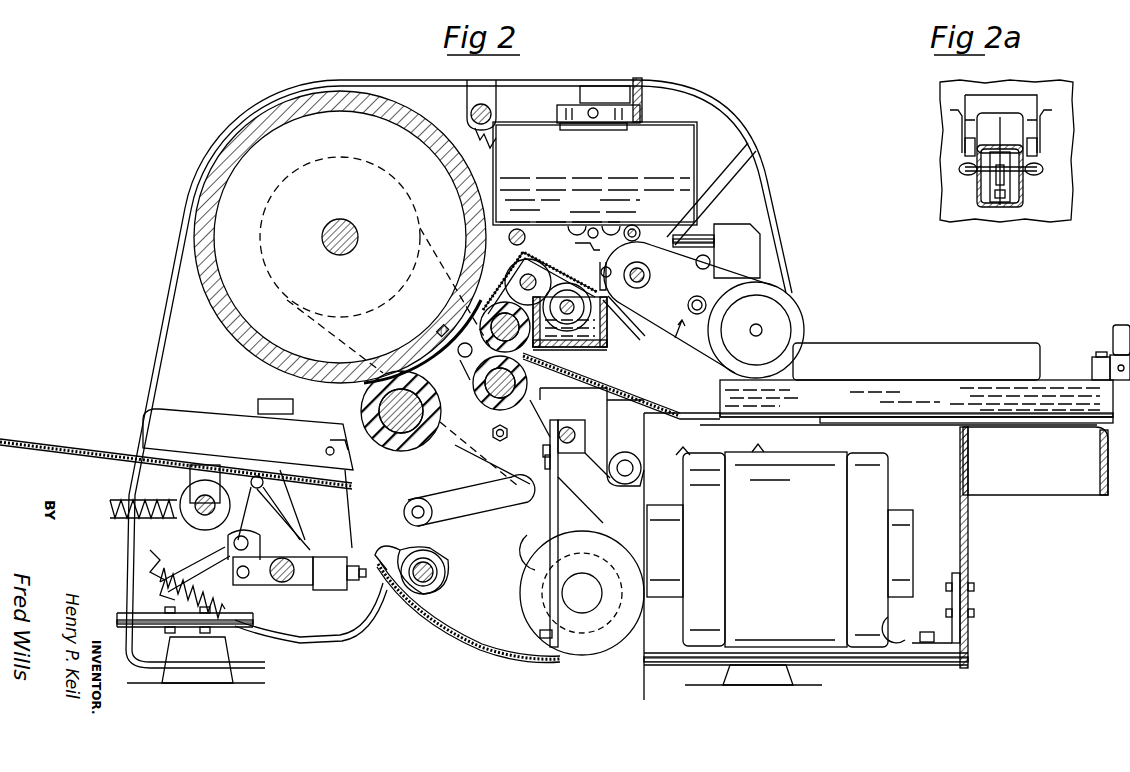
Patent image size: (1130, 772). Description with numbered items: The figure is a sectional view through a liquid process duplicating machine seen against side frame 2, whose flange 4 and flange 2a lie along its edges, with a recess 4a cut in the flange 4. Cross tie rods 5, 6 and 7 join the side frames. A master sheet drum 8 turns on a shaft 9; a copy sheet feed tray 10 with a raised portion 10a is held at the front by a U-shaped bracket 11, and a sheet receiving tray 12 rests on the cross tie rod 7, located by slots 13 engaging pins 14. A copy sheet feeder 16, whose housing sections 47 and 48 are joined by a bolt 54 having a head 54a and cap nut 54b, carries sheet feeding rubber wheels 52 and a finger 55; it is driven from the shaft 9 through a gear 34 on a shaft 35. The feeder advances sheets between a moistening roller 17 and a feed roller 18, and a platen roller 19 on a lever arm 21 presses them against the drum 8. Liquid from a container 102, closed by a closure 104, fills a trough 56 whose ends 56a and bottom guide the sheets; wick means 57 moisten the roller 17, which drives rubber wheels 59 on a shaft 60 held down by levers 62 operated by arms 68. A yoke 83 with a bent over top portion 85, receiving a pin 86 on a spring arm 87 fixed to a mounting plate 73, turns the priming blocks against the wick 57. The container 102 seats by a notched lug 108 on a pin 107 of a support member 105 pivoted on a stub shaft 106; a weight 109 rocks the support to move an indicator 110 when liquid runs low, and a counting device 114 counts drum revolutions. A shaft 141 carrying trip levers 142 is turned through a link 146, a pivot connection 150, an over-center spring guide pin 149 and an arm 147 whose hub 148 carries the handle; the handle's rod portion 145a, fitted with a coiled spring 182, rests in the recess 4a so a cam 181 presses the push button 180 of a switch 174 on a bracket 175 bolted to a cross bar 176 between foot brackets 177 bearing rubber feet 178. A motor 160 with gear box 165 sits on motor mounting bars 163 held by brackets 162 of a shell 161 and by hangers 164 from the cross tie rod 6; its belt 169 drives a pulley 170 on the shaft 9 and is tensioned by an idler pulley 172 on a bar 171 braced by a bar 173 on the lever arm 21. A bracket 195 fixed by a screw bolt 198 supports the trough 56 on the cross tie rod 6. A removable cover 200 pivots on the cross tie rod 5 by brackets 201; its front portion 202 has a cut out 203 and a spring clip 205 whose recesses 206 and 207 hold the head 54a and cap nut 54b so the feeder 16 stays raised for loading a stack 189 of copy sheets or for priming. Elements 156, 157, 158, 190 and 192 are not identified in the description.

In FIG. 2, the side frame 2 is at (222, 372).
In FIG. 2, the flange 4 is at (182, 230).
In FIG. 2, the recess 4a is at (112, 522).
In FIG. 2, the cross tie rod 5 is at (470, 118).
In FIG. 2, the cross tie rod 6 is at (576, 432).
In FIG. 2, the cross tie rod 7 is at (567, 305).
In FIG. 2, the master sheet drum 8 is at (210, 282).
In FIG. 2, the shaft 9 is at (322, 237).
In FIG. 2, the copy sheet feed tray 10 is at (818, 413).
In FIG. 2, the raised portion of feed tray 10a is at (600, 375).
In FIG. 2, the bracket 11 is at (1030, 480).
In FIG. 2, the sheet receiving tray 12 is at (212, 433).
In FIG. 2, the slots 13 is at (330, 440).
In FIG. 2, the pins 14 is at (325, 451).
In FIG. 2, the copy sheet feeder 16 is at (674, 336).
In FIG. 2, the moistening roller 17 is at (460, 348).
In FIG. 2, the feed roller 18 is at (478, 399).
In FIG. 2, the platen roller 19 is at (423, 432).
In FIG. 2, the lever arm 21 is at (410, 479).
In FIG. 2, the gear 34 is at (478, 150).
In FIG. 2, the shaft 35 is at (513, 245).
In FIG. 2, the housing section 47 is at (688, 286).
In FIG. 2A, the housing section 47 is at (978, 200).
In FIG. 2A, the housing section 48 is at (1024, 198).
In FIG. 2, the sheet feeding rubber wheels 52 is at (804, 323).
In FIG. 2, the bolt 54 is at (624, 318).
In FIG. 2A, the bolt 54 is at (980, 183).
In FIG. 2, the head of bolt 54a is at (688, 306).
In FIG. 2A, the head of bolt 54a is at (960, 170).
In FIG. 2A, the cap nut 54b is at (1044, 170).
In FIG. 2, the finger 55 is at (585, 245).
In FIG. 2A, the finger 55 is at (1024, 180).
In FIG. 2, the trough 56 is at (608, 344).
In FIG. 2, the ends of trough 56a is at (596, 360).
In FIG. 2, the wick means 57 is at (505, 290).
In FIG. 2, the rubber wheels 59 is at (536, 276).
In FIG. 2, the shaft 60 is at (526, 289).
In FIG. 2, the levers 62 is at (478, 333).
In FIG. 2, the arms 68 is at (462, 362).
In FIG. 2, the mounting plate 73 is at (510, 272).
In FIG. 2, the yoke 83 is at (620, 320).
In FIG. 2, the bent over top portion 85 is at (614, 269).
In FIG. 2, the pin 86 is at (600, 280).
In FIG. 2, the spring arm 87 is at (540, 279).
In FIG. 2, the container 102 is at (497, 142).
In FIG. 2, the closure 104 is at (557, 110).
In FIG. 2, the support member 105 is at (672, 243).
In FIG. 2, the stub shaft 106 is at (628, 226).
In FIG. 2, the pin 107 is at (590, 228).
In FIG. 2, the notched lug 108 is at (587, 236).
In FIG. 2, the weight 109 is at (746, 250).
In FIG. 2, the indicator 110 is at (716, 175).
In FIG. 2, the counting device 114 is at (615, 102).
In FIG. 2, the shaft 141 is at (278, 582).
In FIG. 2, the trip levers 142 is at (250, 585).
In FIG. 2, the rod portion of handle 145a is at (110, 504).
In FIG. 2, the link 146 is at (248, 540).
In FIG. 2, the arm 147 is at (264, 485).
In FIG. 2, the hub 148 is at (205, 530).
In FIG. 2, the over-center spring guide pin 149 is at (190, 580).
In FIG. 2, the pivot connection 150 is at (249, 545).
In FIG. 2, the wheel 156 is at (428, 595).
In FIG. 2, the wheel hub 157 is at (440, 583).
In FIG. 2, the shaft 158 is at (437, 570).
In FIG. 2, the motor 160 is at (786, 550).
In FIG. 2, the shell 161 is at (968, 540).
In FIG. 2, the brackets 162 is at (960, 635).
In FIG. 2, the motor mounting bars 163 is at (910, 660).
In FIG. 2, the hangers 164 is at (550, 622).
In FIG. 2, the gear box 165 is at (528, 582).
In FIG. 2, the belt 169 is at (527, 430).
In FIG. 2, the pulley 170 is at (270, 276).
In FIG. 2, the bar 171 is at (545, 453).
In FIG. 2, the idler pulley 172 is at (517, 540).
In FIG. 2, the bar 173 is at (458, 512).
In FIG. 2, the switch 174 is at (340, 573).
In FIG. 2, the bracket 175 is at (240, 633).
In FIG. 2, the cross bar 176 is at (240, 642).
In FIG. 2, the foot brackets 177 is at (160, 630).
In FIG. 2, the rubber feet 178 is at (202, 668).
In FIG. 2, the push button 180 is at (300, 582).
In FIG. 2, the cam 181 is at (285, 585).
In FIG. 2, the coiled spring 182 is at (150, 500).
In FIG. 2, the stack of copy sheets 189 is at (1078, 382).
In FIG. 2, the bracket 190 is at (1108, 420).
In FIG. 2, the screw 192 is at (1094, 355).
In FIG. 2, the bracket 195 is at (585, 409).
In FIG. 2, the screw bolt 198 is at (625, 452).
In FIG. 2, the removable cover 200 is at (668, 86).
In FIG. 2, the brackets 201 is at (466, 104).
In FIG. 2A, the brackets 201 is at (950, 110).
In FIG. 2, the front portion of cover 202 is at (790, 215).
In FIG. 2A, the front portion of cover 202 is at (942, 90).
In FIG. 2, the cut out 203 is at (739, 231).
In FIG. 2A, the cut out 203 is at (1028, 100).
In FIG. 2, the spring clip 205 is at (711, 262).
In FIG. 2A, the spring clip 205 is at (1052, 110).
In FIG. 2, the lower recesses 206 is at (734, 273).
In FIG. 2A, the lower recesses 206 is at (964, 130).
In FIG. 2A, the recesses 207 is at (964, 147).
In FIG. 2, the flange 2a is at (712, 213).